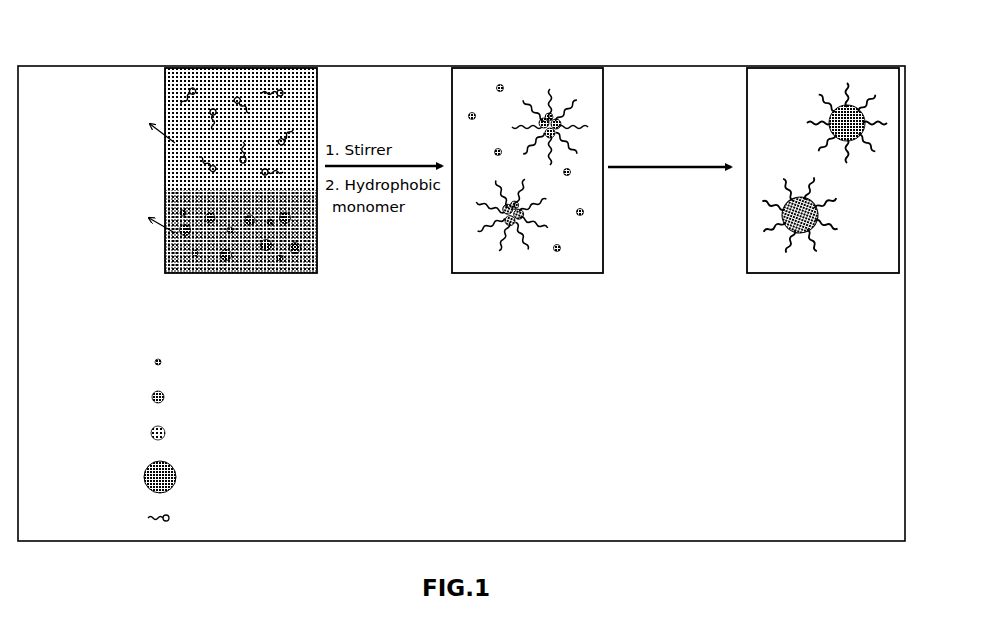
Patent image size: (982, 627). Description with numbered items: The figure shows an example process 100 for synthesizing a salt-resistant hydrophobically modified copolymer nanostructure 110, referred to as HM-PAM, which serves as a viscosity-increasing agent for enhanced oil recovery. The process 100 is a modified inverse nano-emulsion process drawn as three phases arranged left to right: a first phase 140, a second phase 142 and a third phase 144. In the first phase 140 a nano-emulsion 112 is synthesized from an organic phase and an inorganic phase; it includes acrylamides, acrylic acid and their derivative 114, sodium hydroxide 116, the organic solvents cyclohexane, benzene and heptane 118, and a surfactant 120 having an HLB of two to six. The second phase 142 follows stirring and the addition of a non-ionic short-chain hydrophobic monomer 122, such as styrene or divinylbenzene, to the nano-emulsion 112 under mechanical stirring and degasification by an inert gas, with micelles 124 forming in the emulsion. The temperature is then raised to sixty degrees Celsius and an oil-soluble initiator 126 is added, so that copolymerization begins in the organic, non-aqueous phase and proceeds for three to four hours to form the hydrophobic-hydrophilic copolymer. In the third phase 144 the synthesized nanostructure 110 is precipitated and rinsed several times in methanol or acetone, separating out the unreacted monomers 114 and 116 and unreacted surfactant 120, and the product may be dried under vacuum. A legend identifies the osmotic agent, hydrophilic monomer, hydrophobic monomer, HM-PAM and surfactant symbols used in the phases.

The process 100 is at (461, 273).
The hydrophobically modified copolymer nanostructure 110 is at (168, 477).
The nano-emulsion 112 is at (144, 172).
The acrylamides, acrylic acid and their derivative 114 is at (211, 397).
The sodium hydroxide 116 is at (182, 362).
The cyclohexane, benzene and heptane 118 is at (443, 102).
The surfactant with HLB of 2-6 120 is at (168, 518).
The non-ionic short-chain hydrophobic monomer 122 is at (216, 433).
The micelles 124 is at (477, 228).
The oil-soluble initiator 126 is at (674, 157).
The first phase 140 is at (241, 187).
The second phase 142 is at (527, 187).
The third phase 144 is at (823, 187).